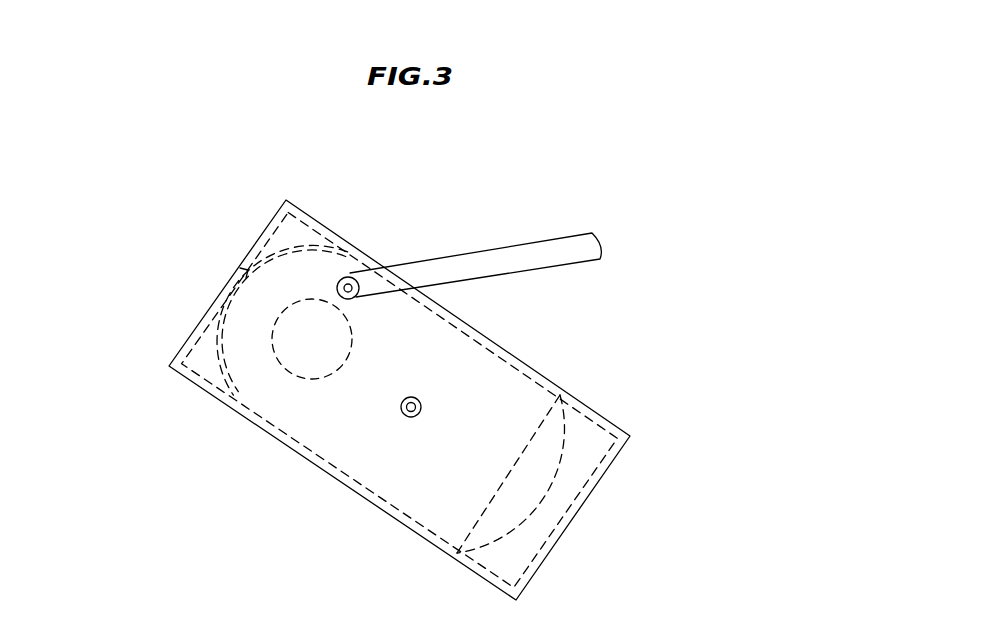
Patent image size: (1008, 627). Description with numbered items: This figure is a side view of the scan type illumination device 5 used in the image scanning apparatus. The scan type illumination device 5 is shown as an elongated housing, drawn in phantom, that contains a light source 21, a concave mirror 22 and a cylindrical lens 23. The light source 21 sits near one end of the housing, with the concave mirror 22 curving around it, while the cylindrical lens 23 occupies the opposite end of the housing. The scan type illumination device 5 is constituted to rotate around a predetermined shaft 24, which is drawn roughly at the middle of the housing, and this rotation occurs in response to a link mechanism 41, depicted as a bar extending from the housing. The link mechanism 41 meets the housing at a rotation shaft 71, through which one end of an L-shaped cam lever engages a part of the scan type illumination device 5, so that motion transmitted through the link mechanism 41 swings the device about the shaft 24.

The scan type illumination device 5 is at (130, 266).
The light source 21 is at (286, 376).
The concave mirror 22 is at (291, 252).
The cylindrical lens 23 is at (528, 508).
The shaft 24 is at (419, 398).
The link mechanism 41 is at (502, 257).
The rotation shaft 71 is at (350, 277).